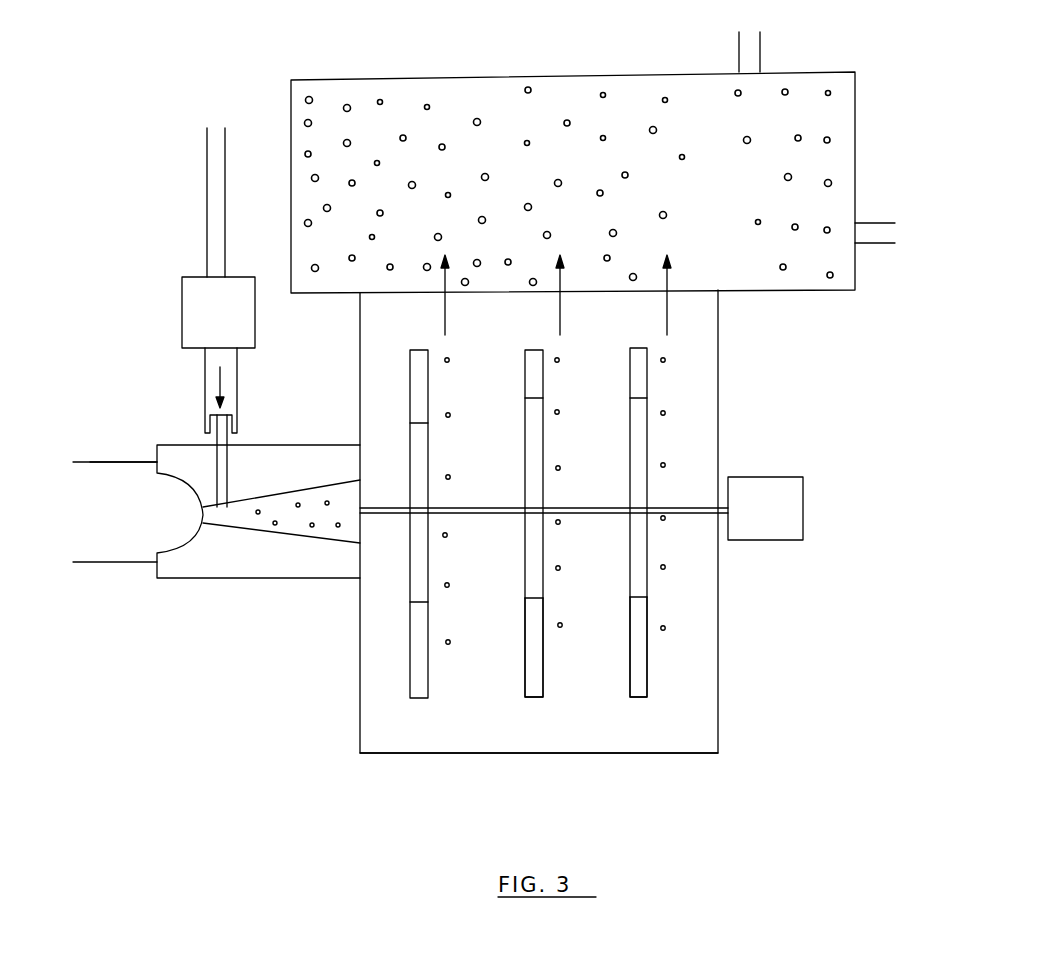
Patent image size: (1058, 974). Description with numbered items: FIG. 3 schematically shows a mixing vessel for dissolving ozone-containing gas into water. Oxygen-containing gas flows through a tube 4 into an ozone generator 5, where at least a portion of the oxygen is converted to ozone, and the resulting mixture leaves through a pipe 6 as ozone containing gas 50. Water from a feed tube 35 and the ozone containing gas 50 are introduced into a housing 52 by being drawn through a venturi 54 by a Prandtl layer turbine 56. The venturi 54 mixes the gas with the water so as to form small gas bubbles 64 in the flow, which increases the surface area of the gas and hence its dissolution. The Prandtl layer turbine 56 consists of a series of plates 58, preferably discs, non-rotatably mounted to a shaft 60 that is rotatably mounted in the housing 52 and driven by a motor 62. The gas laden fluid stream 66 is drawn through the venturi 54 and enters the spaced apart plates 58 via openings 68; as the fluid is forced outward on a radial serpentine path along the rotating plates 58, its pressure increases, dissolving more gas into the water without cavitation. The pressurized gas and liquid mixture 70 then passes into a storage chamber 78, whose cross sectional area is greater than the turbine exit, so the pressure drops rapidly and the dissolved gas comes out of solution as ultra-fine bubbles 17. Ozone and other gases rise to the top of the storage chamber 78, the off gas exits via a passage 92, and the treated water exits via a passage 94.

The tube 4 is at (226, 199).
The ozone generator 5 is at (245, 308).
The pipe 6 is at (237, 403).
The ultra-fine bubbles 17 is at (663, 97).
The feed tube 35 is at (113, 567).
The ozone containing gas 50 is at (207, 384).
The housing 52 is at (722, 728).
The venturi 54 is at (207, 562).
The Prandtl layer turbine 56 is at (641, 768).
The plates 58 is at (648, 376).
The shaft 60 is at (682, 505).
The motor 62 is at (764, 488).
The small gas bubbles 64 is at (273, 526).
The gas laden fluid stream 66 is at (122, 477).
The openings 68 is at (538, 625).
The pressurized gas and liquid mixture 70 is at (705, 300).
The storage chamber 78 is at (755, 198).
The passage 92 is at (750, 42).
The passage 94 is at (890, 232).